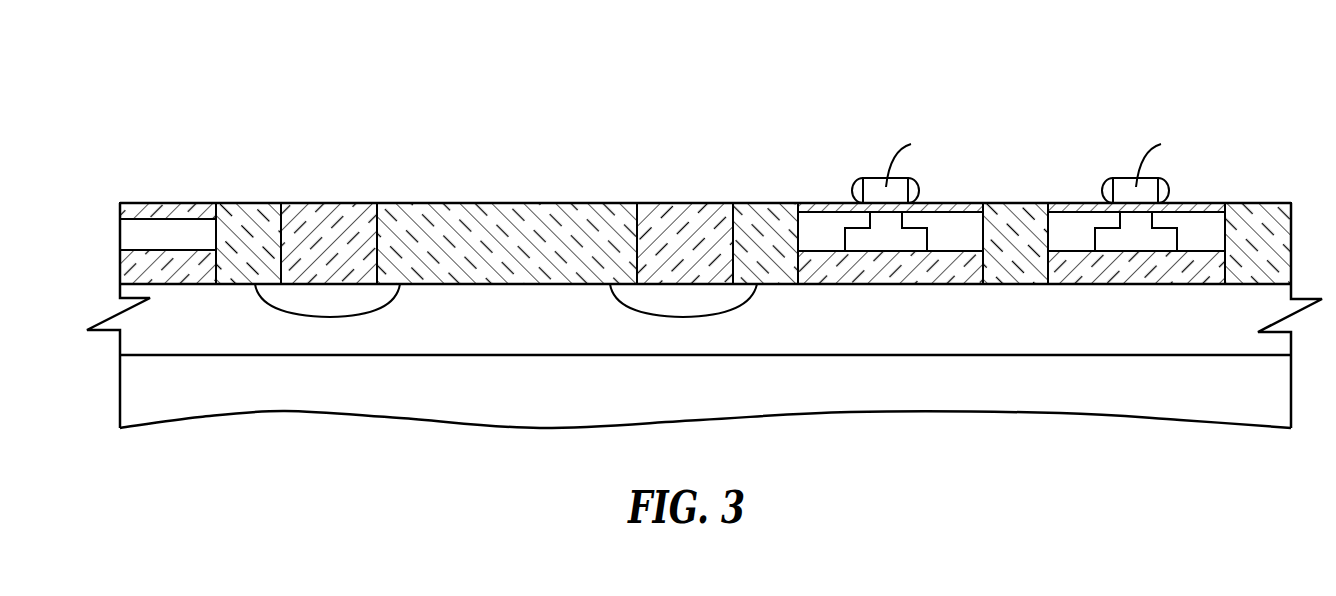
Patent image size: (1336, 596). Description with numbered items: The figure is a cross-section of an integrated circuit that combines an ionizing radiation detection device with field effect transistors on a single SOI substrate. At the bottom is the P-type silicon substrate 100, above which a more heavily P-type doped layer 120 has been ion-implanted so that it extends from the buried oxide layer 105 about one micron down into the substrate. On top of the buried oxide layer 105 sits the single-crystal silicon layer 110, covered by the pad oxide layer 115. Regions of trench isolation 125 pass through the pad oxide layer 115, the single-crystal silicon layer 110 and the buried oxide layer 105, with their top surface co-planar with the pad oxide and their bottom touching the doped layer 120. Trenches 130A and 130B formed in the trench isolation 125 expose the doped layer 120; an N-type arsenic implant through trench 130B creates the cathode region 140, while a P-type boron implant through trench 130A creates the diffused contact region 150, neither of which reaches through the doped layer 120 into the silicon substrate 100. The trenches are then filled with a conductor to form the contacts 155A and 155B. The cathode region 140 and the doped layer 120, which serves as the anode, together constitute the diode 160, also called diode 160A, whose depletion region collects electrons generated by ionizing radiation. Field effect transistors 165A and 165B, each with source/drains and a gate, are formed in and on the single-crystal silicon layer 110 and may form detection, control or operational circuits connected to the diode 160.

The silicon substrate 100 is at (1251, 397).
The doped layer 120 is at (1251, 341).
The buried oxide layer 105 is at (135, 266).
The single-crystal silicon layer 110 is at (135, 235).
The pad oxide layer 115 is at (125, 212).
The trench isolation 125 is at (234, 212).
The trench 130A is at (330, 150).
The trench 130B is at (685, 160).
The cathode region 140 is at (725, 299).
The diffused contact region 150 is at (288, 300).
The contact 155A is at (315, 218).
The contact 155B is at (700, 218).
The diode 160 is at (497, 146).
The diode 160A is at (740, 97).
The field effect transistor 165A is at (999, 97).
The field effect transistor 165B is at (1250, 97).